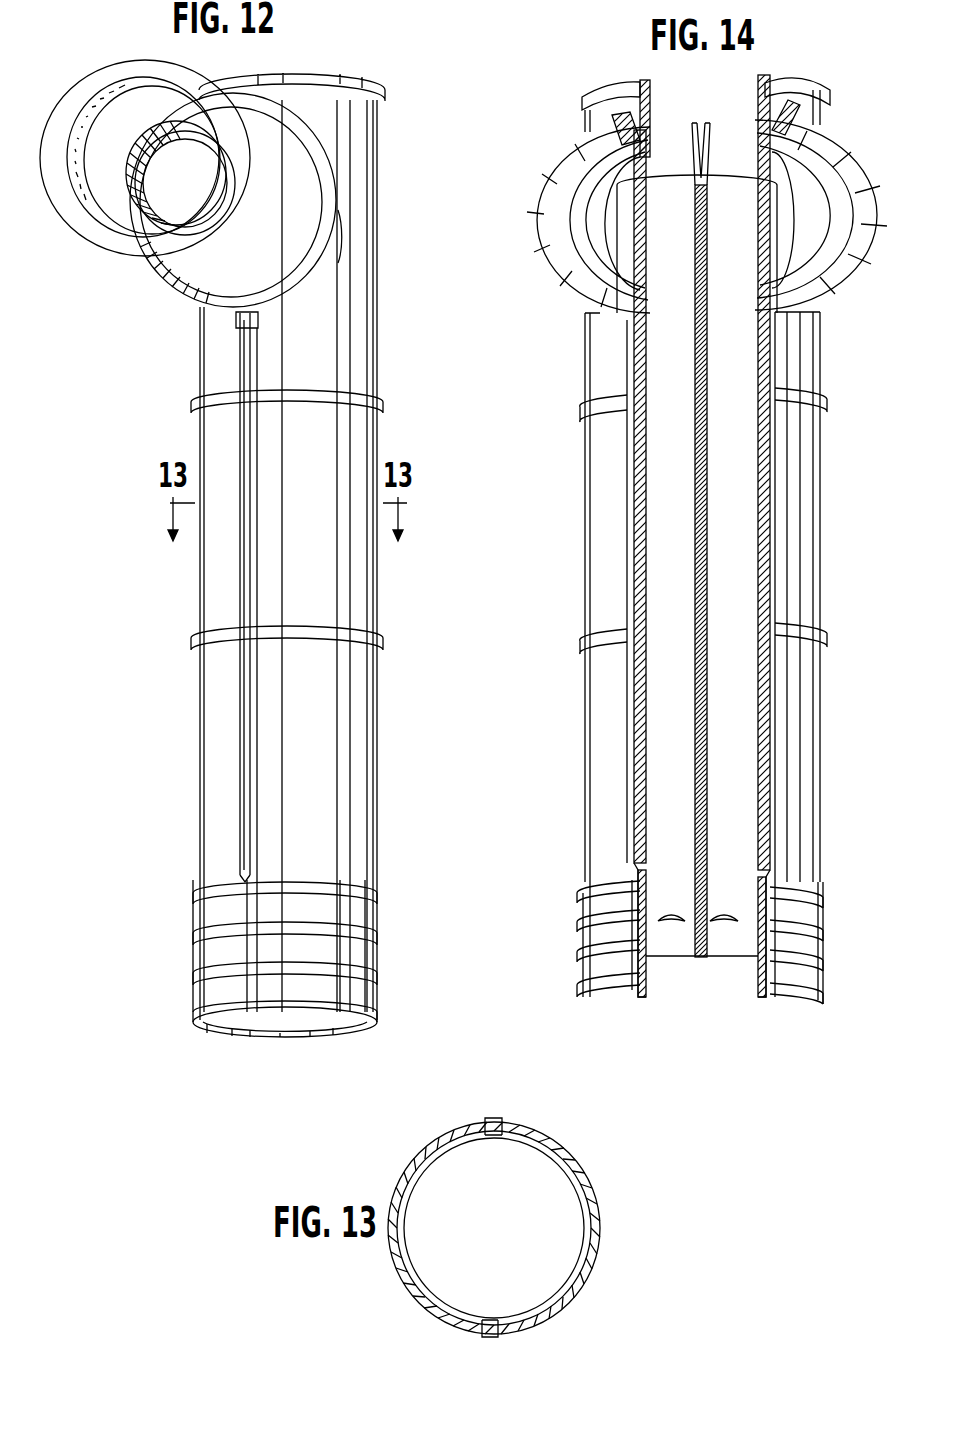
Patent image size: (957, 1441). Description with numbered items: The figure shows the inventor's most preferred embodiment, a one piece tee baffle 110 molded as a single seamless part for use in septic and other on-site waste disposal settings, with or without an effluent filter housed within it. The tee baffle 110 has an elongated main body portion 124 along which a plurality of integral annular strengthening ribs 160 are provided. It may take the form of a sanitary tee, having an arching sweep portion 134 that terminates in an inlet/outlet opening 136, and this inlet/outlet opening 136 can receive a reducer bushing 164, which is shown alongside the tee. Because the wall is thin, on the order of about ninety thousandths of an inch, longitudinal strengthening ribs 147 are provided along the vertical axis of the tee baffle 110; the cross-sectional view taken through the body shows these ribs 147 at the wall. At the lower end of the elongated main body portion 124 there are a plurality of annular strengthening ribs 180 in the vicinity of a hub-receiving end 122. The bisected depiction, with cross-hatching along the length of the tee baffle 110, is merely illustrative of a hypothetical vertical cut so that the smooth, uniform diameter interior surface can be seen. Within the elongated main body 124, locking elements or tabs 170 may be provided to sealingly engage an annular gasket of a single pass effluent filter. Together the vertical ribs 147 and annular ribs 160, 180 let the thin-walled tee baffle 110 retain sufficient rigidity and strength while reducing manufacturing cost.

In FIG. 12, the one piece tee baffle 110 is at (377, 391).
In FIG. 14, the one piece tee baffle 110 is at (588, 524).
In FIG. 13, the one piece tee baffle 110 is at (604, 1212).
In FIG. 12, the hub-receiving end 122 is at (297, 1030).
In FIG. 12, the elongated main body portion 124 is at (332, 607).
In FIG. 12, the arching sweep portion 134 is at (342, 243).
In FIG. 12, the inlet/outlet opening 136 is at (298, 284).
In FIG. 12, the longitudinal strengthening ribs 147 is at (253, 655).
In FIG. 14, the longitudinal strengthening ribs 147 is at (773, 758).
In FIG. 13, the longitudinal strengthening ribs 147 is at (503, 1122).
In FIG. 12, the annular strengthening ribs 160 is at (205, 386).
In FIG. 14, the annular strengthening ribs 160 is at (777, 385).
In FIG. 12, the reducer bushing 164 is at (98, 243).
In FIG. 14, the locking elements or tabs 170 is at (673, 924).
In FIG. 12, the annular strengthening ribs 180 is at (373, 937).
In FIG. 14, the annular strengthening ribs 180 is at (821, 977).